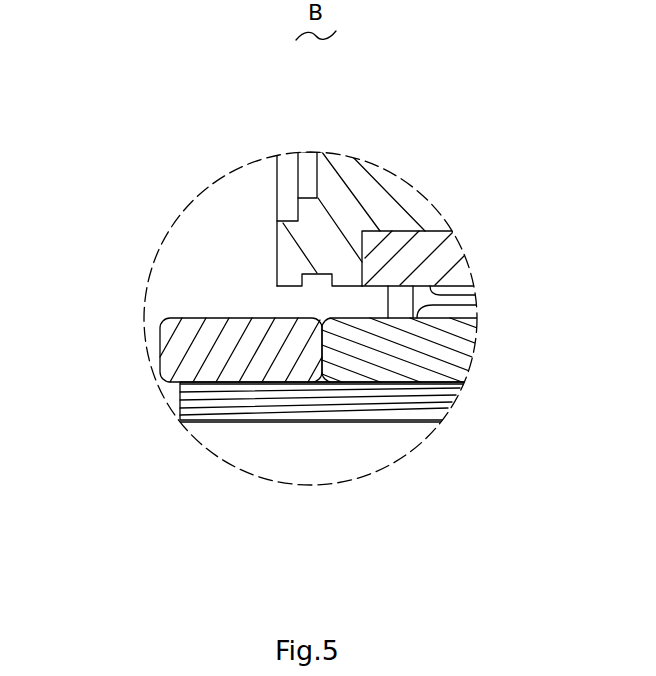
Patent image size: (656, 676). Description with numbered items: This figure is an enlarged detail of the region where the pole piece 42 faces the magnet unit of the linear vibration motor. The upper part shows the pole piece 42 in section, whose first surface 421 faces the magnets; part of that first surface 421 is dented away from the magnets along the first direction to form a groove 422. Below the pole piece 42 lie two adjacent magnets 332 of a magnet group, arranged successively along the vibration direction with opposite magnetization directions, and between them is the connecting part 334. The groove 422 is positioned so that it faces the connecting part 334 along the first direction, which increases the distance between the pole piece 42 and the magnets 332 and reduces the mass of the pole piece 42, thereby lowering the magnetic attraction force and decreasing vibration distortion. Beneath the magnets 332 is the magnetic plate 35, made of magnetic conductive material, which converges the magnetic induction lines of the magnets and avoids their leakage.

The pole piece 42 is at (313, 215).
The first surface 421 is at (350, 285).
The groove 422 is at (316, 285).
The magnet 332 is at (182, 362).
The connecting part 334 is at (320, 378).
The magnetic plate 35 is at (433, 405).